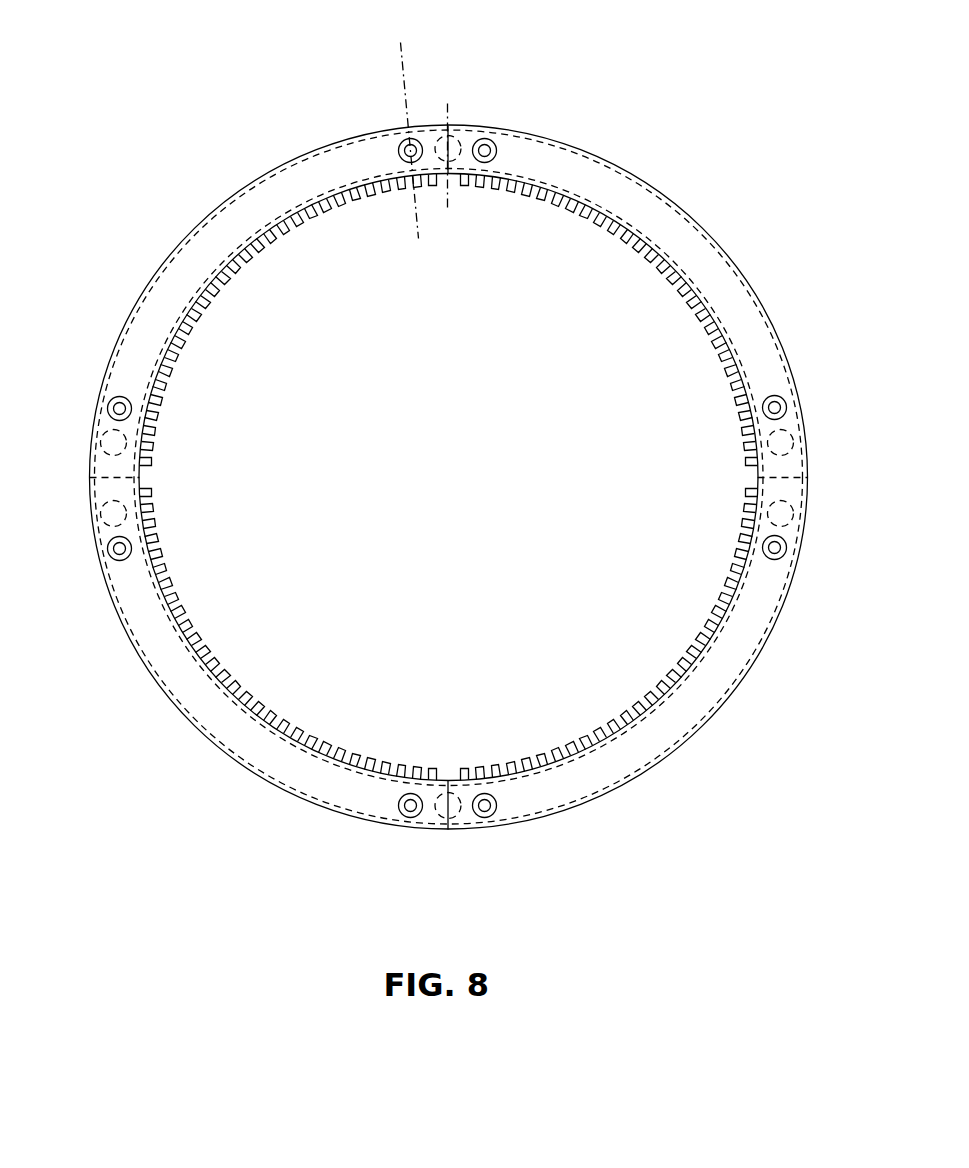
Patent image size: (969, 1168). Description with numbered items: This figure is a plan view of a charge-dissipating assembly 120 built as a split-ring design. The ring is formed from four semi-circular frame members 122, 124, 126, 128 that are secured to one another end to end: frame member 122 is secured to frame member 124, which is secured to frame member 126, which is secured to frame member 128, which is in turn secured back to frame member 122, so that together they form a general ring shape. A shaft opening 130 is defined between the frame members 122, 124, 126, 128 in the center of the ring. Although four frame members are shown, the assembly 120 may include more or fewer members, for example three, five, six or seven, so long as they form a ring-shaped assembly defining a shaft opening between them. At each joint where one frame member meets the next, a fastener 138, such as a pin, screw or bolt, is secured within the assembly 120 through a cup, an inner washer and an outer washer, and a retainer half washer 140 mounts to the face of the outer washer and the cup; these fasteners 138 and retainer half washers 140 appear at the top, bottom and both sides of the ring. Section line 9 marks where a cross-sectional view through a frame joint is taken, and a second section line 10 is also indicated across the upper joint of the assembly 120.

The charge-dissipating assembly 120 is at (170, 44).
The frame member 122 is at (215, 225).
The frame member 124 is at (683, 225).
The frame member 126 is at (718, 688).
The frame member 128 is at (170, 683).
The shaft opening 130 is at (658, 367).
The fastener 138 is at (444, 135).
The retainer half washer 140 is at (409, 138).
The line 9- 9 is at (447, 102).
The section line 10- 10 is at (400, 38).